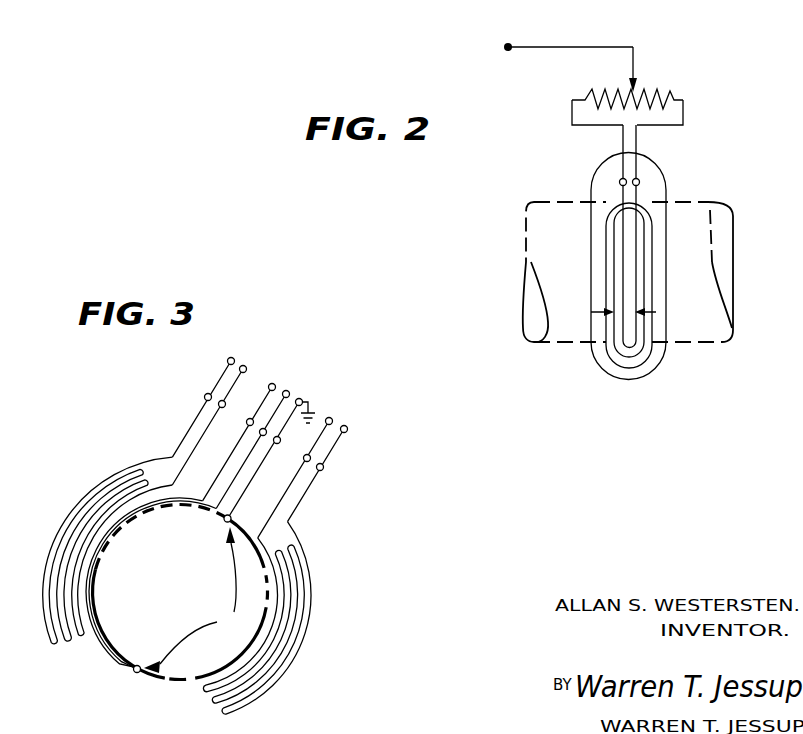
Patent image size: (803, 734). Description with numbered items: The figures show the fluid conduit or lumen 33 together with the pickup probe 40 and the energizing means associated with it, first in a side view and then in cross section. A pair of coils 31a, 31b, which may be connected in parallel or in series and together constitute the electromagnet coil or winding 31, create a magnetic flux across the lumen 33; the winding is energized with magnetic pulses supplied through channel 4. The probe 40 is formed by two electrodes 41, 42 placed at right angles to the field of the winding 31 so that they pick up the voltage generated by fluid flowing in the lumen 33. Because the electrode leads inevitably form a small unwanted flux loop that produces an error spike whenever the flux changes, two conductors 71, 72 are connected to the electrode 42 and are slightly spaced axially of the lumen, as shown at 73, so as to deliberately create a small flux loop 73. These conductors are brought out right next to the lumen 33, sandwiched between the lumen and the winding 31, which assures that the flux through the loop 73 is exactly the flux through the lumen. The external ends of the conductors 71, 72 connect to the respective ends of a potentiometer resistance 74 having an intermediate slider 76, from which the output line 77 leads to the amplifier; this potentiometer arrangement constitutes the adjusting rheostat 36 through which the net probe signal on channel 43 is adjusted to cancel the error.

In FIG. 2, the output line 77 is at (555, 47).
In FIG. 2, the intermediate slider 76 is at (635, 60).
In FIG. 2, the potentiometer resistance 74 is at (660, 99).
In FIG. 2, the adjusting rheostat 36 is at (564, 117).
In FIG. 2, the channel 43 is at (647, 165).
In FIG. 3, the channel 43 is at (276, 386).
In FIG. 2, the electromagnet coil or winding 31 is at (653, 216).
In FIG. 2, the lumen 33 is at (570, 242).
In FIG. 2, the conductor 71 is at (638, 256).
In FIG. 3, the conductor 71 is at (91, 590).
In FIG. 2, the conductor 72 is at (625, 287).
In FIG. 3, the conductor 72 is at (112, 527).
In FIG. 2, the small flux loop 73 is at (598, 312).
In FIG. 3, the coil 31a is at (95, 483).
In FIG. 3, the coil 31b is at (300, 650).
In FIG. 3, the channel 4 is at (246, 365).
In FIG. 3, the electrode 41 is at (222, 521).
In FIG. 3, the electrode 42 is at (138, 664).
In FIG. 3, the probe 40 is at (193, 600).